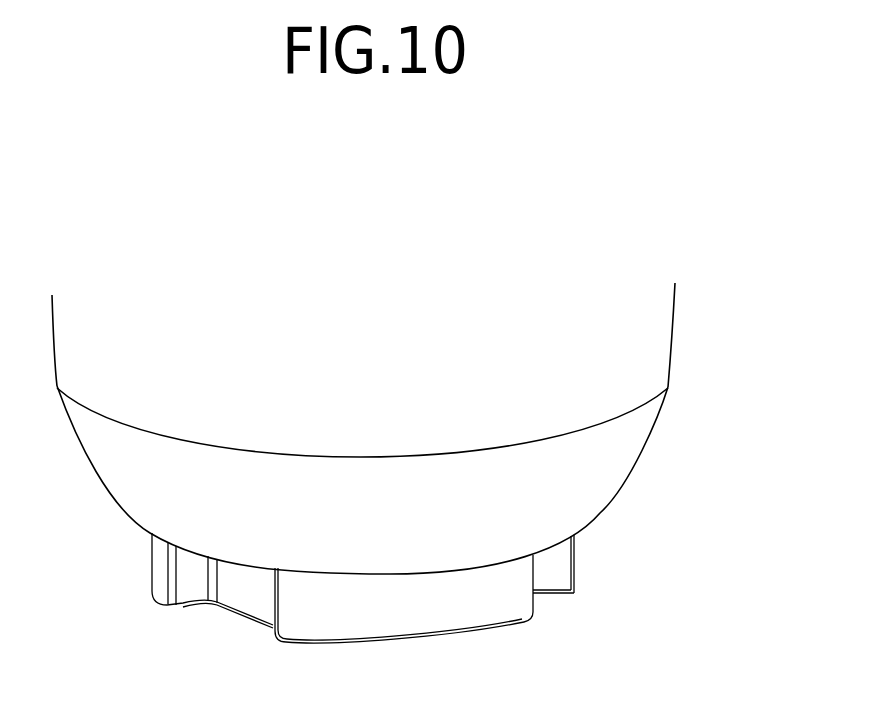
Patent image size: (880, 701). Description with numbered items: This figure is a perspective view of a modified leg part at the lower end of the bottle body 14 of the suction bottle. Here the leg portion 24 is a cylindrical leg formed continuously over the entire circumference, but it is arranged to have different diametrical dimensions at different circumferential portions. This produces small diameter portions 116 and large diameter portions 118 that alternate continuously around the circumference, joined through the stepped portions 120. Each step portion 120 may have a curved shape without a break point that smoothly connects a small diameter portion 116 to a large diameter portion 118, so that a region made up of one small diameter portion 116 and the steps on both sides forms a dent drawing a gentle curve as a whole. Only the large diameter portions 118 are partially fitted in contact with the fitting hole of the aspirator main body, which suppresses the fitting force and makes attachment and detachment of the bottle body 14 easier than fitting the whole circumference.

The bottle body 14 is at (690, 324).
The leg portion 24 is at (354, 606).
The small diameter portion 116 is at (235, 592).
The large diameter portion 118 is at (157, 562).
The stepped portion 120 is at (190, 587).